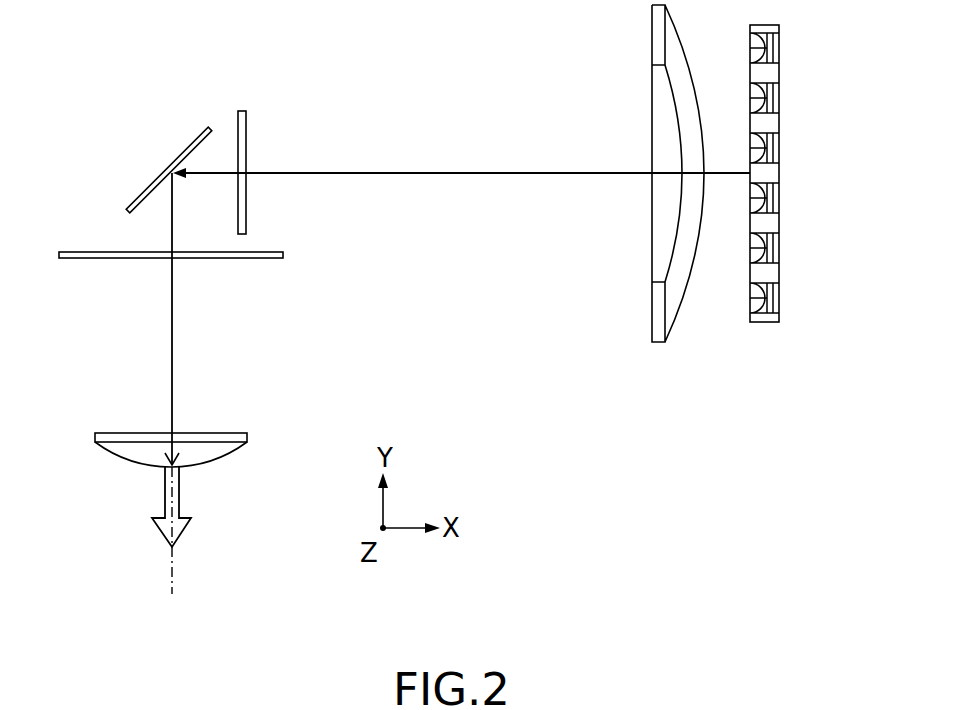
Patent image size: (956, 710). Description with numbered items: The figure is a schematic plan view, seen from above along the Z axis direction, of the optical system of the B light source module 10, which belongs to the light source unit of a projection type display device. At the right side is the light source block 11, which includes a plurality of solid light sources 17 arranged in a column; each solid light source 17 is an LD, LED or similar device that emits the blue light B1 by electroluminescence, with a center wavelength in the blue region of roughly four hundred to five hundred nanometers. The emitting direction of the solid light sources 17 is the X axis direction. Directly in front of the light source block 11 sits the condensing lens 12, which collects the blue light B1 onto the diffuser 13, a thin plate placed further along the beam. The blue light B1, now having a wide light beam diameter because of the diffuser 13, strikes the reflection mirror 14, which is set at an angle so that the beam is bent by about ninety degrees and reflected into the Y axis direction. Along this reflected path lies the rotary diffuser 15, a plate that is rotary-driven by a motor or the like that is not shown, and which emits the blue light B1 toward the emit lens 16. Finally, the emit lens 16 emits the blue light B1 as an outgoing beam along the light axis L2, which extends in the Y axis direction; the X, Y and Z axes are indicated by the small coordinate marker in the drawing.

The B light source module 10 is at (427, 62).
The light source block 11 is at (765, 325).
The condensing lens 12 is at (656, 345).
The diffuser 13 is at (247, 139).
The reflection mirror 14 is at (192, 142).
The rotary diffuser 15 is at (222, 261).
The emit lens 16 is at (222, 432).
The solid light source 17 is at (774, 248).
The blue light B1 is at (460, 176).
The light axis L2 is at (174, 577).